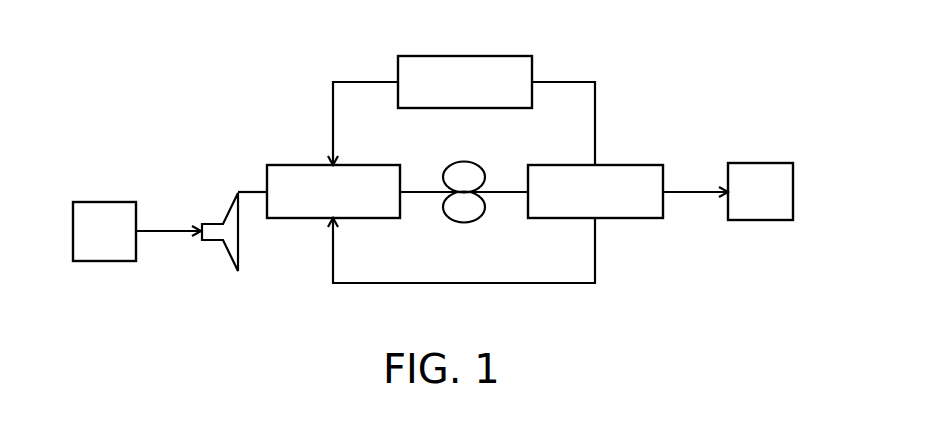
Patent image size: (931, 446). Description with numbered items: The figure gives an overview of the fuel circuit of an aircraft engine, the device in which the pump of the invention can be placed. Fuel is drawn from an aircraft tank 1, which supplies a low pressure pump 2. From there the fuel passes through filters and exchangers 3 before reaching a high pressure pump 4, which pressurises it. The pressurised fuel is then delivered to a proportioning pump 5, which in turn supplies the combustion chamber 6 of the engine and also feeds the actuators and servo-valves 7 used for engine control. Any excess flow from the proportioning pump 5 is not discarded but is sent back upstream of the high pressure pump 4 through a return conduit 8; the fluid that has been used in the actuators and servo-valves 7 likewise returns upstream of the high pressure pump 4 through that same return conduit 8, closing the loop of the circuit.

The aircraft tank 1 is at (99, 201).
The low pressure pump 2 is at (241, 245).
The filters and exchangers 3 is at (288, 165).
The high pressure pump 4 is at (439, 201).
The proportioning pump 5 is at (618, 165).
The combustion chamber 6 is at (755, 163).
The actuators and servo-valves 7 is at (532, 67).
The return conduit 8 is at (596, 250).